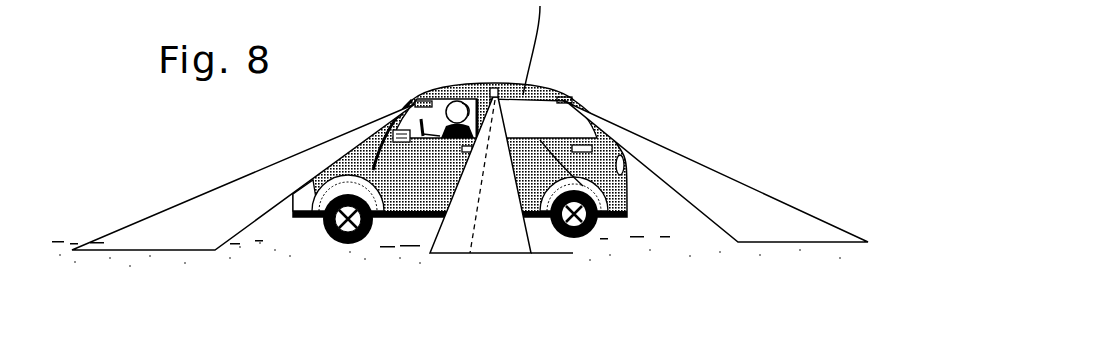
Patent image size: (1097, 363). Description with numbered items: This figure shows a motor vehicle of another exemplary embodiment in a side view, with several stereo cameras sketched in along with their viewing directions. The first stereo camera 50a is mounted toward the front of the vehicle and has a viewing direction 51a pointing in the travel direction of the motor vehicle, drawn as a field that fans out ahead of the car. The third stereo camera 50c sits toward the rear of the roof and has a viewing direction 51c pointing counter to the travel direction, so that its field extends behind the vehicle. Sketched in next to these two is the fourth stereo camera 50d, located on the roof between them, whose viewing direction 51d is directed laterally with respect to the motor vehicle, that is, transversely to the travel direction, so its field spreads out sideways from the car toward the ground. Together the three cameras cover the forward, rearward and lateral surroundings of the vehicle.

The first stereo camera 50a is at (418, 92).
The third stereo camera 50c is at (560, 92).
The fourth stereo camera 50d is at (494, 80).
The viewing direction 51a is at (236, 200).
The viewing direction 51c is at (722, 188).
The viewing direction 51d is at (498, 233).